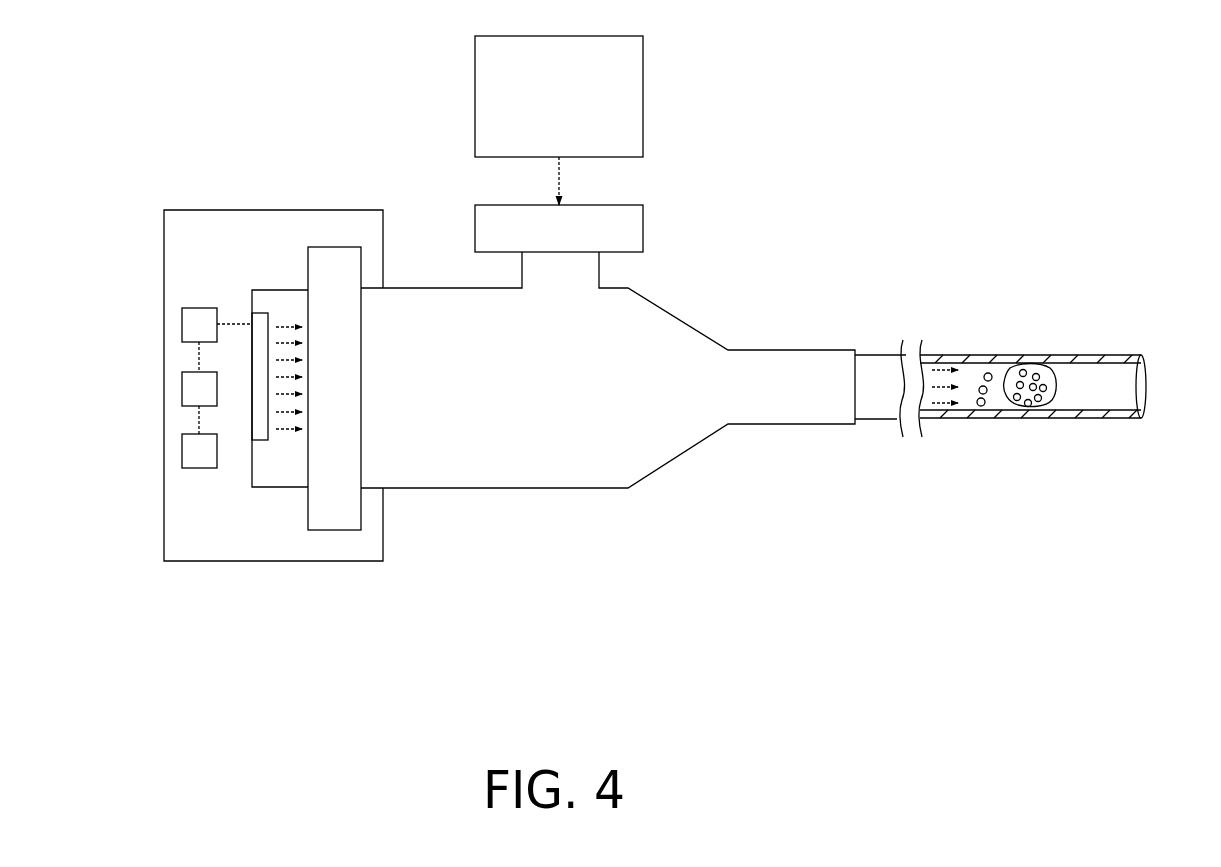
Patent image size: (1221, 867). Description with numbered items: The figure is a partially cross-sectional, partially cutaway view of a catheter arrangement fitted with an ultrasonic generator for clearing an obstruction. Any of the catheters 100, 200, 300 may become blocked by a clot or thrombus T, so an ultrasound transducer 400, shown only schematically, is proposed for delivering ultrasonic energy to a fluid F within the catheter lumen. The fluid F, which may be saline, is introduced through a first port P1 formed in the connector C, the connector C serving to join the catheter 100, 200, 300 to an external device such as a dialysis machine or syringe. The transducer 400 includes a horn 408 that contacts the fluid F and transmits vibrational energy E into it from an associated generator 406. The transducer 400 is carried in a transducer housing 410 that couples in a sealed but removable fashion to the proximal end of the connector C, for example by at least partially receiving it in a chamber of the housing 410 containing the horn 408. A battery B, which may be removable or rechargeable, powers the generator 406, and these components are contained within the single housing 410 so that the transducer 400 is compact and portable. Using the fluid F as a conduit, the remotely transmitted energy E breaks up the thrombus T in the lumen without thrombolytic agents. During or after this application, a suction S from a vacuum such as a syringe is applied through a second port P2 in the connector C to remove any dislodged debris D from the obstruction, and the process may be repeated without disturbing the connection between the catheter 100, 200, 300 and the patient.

The first port P1 is at (528, 319).
The second port P2 is at (611, 144).
The transducer housing 410 is at (247, 217).
The ultrasound transducer 400 is at (183, 308).
The generator 406 is at (185, 374).
The battery B is at (185, 436).
The horn 408 is at (255, 442).
The fluid F is at (280, 316).
The vibrational energy E is at (283, 431).
The connector C is at (492, 476).
The suction S is at (564, 114).
The catheter 100 is at (1000, 359).
The catheter 200 is at (1000, 359).
The catheter 300 is at (1035, 307).
The debris D is at (980, 407).
The thrombus T is at (1032, 405).